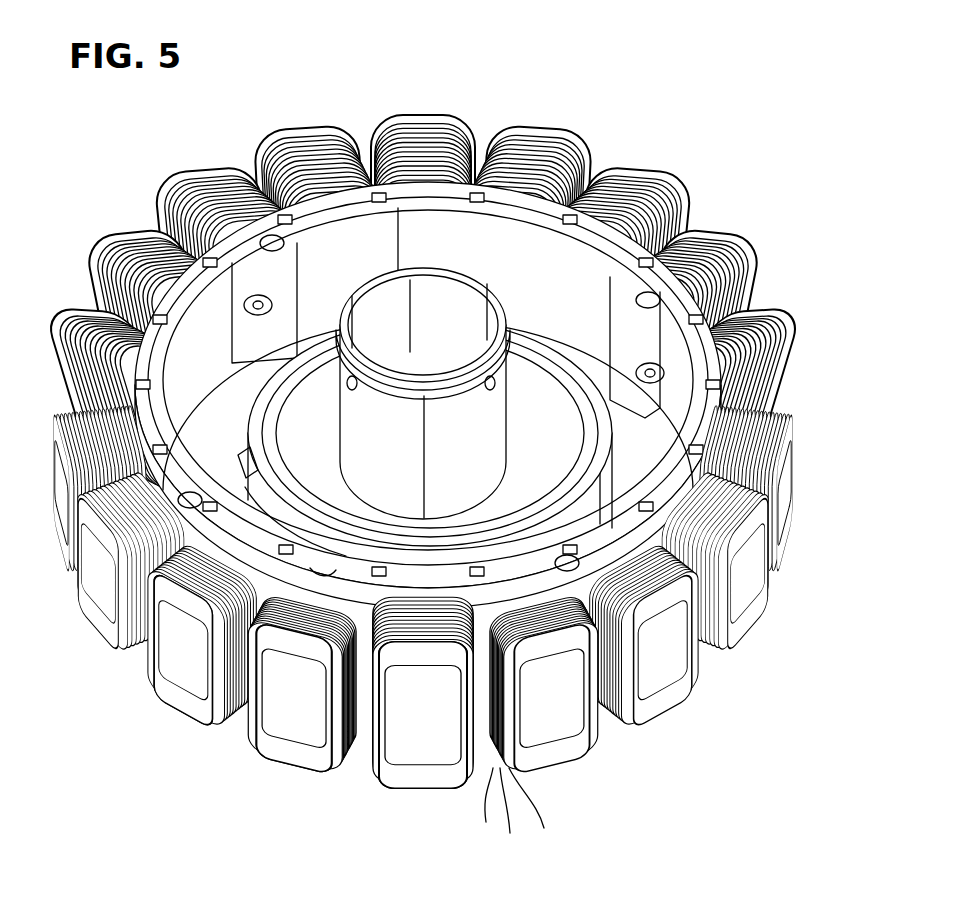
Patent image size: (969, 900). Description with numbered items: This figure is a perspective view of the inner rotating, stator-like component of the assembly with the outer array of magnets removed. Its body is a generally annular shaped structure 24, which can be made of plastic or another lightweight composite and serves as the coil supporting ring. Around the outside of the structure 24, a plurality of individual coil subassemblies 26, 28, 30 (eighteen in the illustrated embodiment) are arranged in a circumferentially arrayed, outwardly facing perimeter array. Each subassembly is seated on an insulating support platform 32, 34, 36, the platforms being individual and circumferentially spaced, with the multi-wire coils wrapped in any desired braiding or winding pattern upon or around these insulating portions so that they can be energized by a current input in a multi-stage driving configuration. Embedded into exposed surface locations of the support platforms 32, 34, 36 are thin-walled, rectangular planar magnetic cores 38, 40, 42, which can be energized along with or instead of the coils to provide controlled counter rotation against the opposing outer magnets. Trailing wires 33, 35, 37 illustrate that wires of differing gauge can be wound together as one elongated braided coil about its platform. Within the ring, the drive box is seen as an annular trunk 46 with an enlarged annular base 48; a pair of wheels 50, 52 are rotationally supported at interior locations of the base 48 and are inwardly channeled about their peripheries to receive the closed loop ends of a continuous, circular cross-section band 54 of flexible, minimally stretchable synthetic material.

The annular shaped structure 24 is at (487, 279).
The coil subassembly 26 is at (186, 664).
The coil subassembly 28 is at (281, 717).
The coil subassembly 30 is at (403, 730).
The support platform 32 is at (172, 702).
The trailing wire 33 is at (487, 822).
The support platform 34 is at (262, 745).
The trailing wire 35 is at (514, 835).
The support platform 36 is at (385, 770).
The trailing wire 37 is at (546, 818).
The magnetic core 38 is at (159, 660).
The magnetic core 40 is at (270, 705).
The magnetic core 42 is at (402, 725).
The annular trunk 46 is at (392, 459).
The annular base 48 is at (255, 495).
The wheel 50 is at (248, 468).
The wheel 52 is at (322, 572).
The band 54 is at (600, 456).